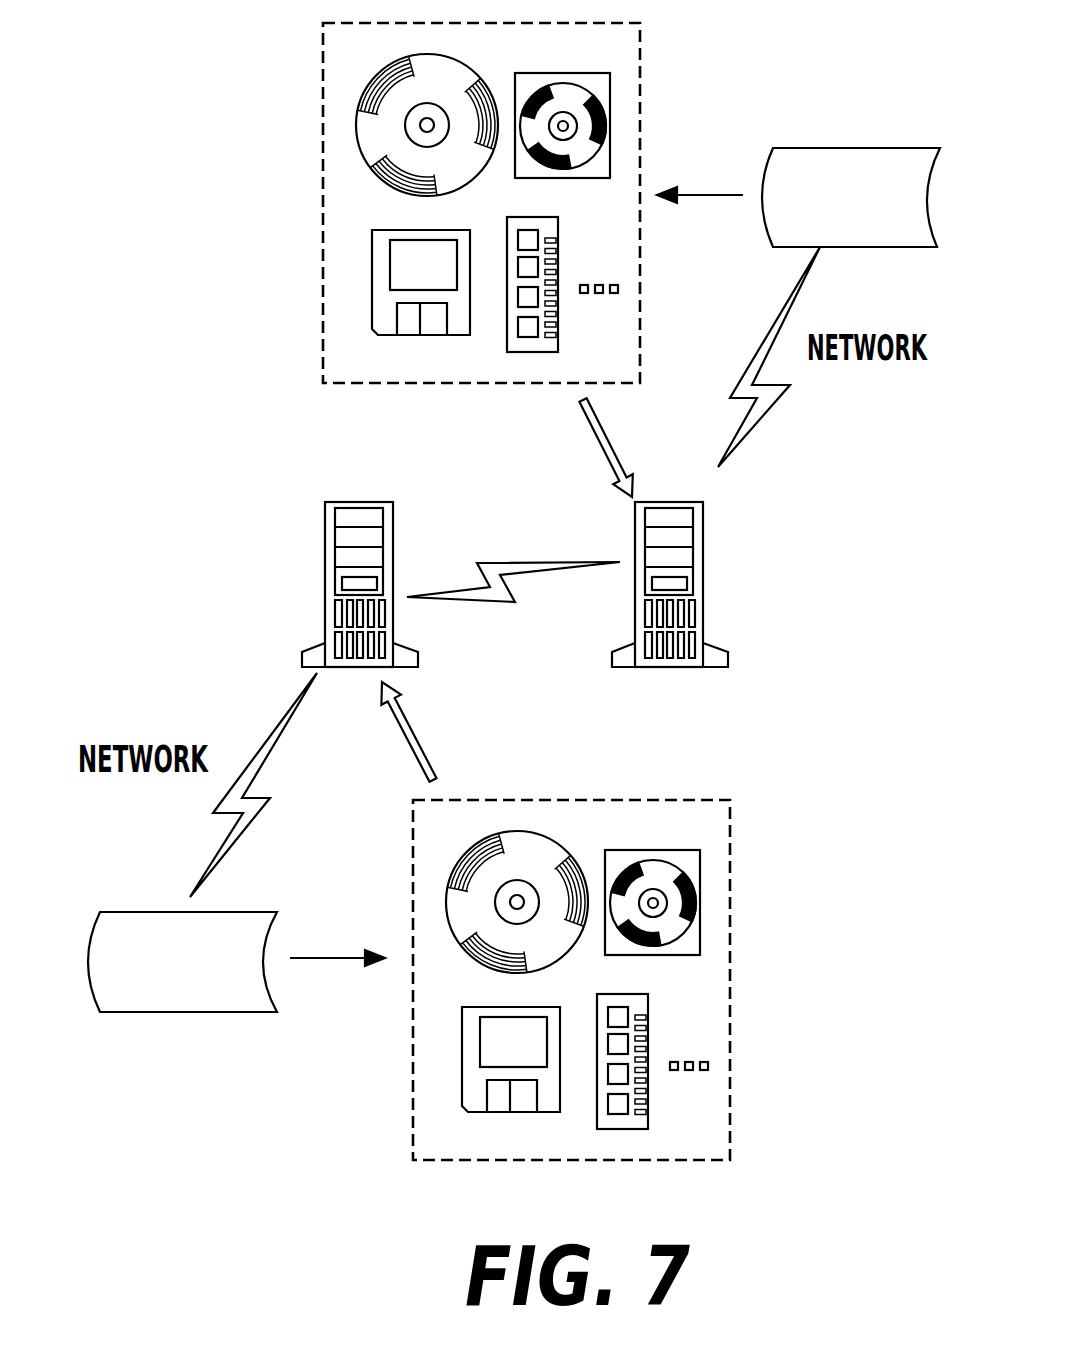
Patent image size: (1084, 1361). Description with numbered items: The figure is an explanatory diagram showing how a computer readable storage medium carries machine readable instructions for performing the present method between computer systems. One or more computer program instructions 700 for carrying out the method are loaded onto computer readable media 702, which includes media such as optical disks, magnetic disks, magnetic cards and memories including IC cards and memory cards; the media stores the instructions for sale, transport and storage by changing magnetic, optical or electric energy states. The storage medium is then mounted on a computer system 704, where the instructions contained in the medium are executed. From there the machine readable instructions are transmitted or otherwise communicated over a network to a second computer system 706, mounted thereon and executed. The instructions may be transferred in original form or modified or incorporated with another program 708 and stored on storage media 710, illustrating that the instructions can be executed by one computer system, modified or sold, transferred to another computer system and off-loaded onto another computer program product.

The computer program instructions 700 is at (132, 910).
The computer readable media 702 is at (732, 953).
The computer system 704 is at (325, 582).
The computer system 706 is at (703, 582).
The program 708 is at (843, 148).
The storage media 710 is at (322, 182).